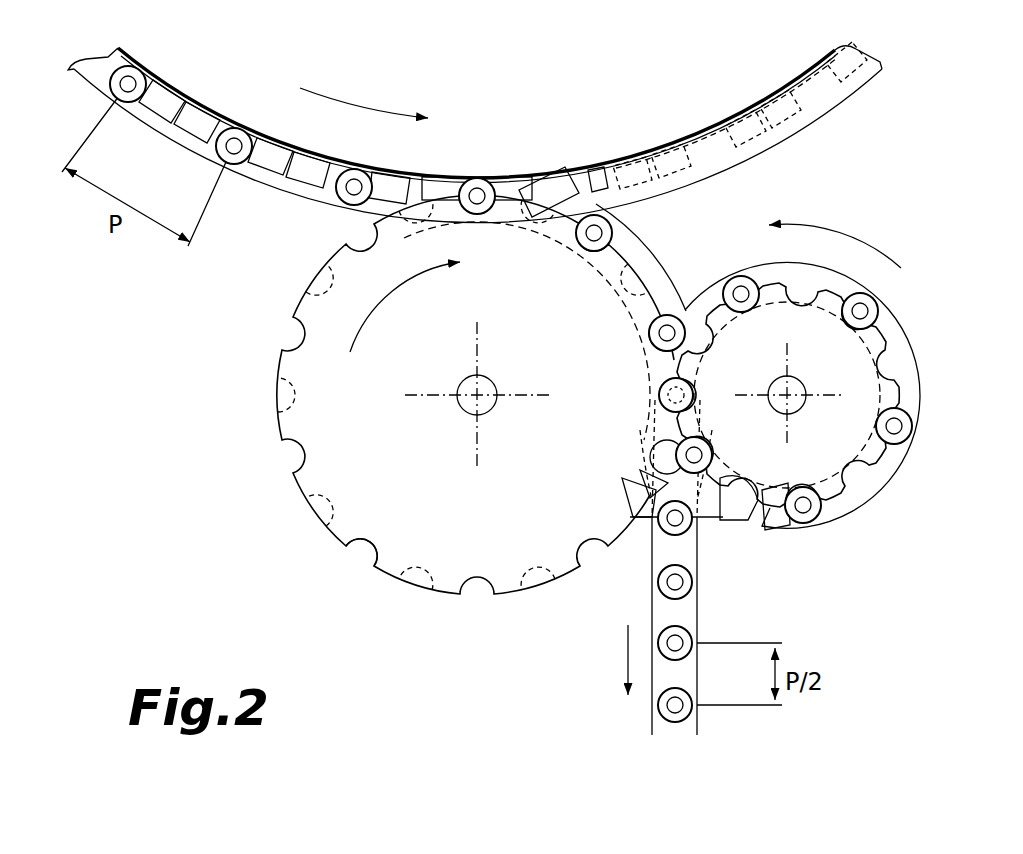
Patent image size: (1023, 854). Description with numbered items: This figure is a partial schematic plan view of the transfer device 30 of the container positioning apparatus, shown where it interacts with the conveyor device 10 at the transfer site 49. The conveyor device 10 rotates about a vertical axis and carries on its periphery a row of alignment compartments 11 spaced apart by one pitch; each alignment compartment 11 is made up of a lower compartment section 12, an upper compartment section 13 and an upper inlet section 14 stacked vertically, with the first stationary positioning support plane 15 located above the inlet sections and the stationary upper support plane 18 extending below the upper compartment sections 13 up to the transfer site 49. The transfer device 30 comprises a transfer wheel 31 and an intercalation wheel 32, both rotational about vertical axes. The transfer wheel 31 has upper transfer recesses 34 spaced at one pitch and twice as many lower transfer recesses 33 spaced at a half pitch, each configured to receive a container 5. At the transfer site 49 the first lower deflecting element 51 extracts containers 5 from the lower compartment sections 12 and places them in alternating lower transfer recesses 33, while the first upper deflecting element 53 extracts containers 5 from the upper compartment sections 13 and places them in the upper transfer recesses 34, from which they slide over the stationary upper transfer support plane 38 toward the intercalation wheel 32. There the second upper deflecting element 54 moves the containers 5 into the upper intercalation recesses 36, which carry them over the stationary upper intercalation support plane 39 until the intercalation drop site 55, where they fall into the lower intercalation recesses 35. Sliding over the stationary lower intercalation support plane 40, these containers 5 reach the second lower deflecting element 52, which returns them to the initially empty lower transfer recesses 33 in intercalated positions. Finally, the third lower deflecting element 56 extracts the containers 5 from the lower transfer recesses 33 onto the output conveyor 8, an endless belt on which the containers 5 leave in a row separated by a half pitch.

The container 5 is at (501, 416).
The output conveyor 8 is at (655, 725).
The conveyor device 10 is at (488, 131).
The alignment compartment 11 is at (257, 172).
The lower compartment section 12 is at (476, 111).
The upper compartment section 13 is at (257, 128).
The upper inlet section 14 is at (200, 130).
The first stationary positioning support plane 15 is at (838, 97).
The stationary upper support plane 18 is at (112, 90).
The transfer device 30 is at (655, 577).
The transfer wheel 31 is at (437, 416).
The intercalation wheel 32 is at (841, 402).
The lower transfer recess 33 is at (310, 510).
The upper transfer recess 34 is at (370, 545).
The lower intercalation recess 35 is at (813, 432).
The upper intercalation recess 36 is at (853, 482).
The stationary upper transfer support plane 38 is at (643, 260).
The stationary upper intercalation support plane 39 is at (740, 525).
The stationary lower intercalation support plane 40 is at (893, 468).
The transfer site 49 is at (479, 162).
The first stationary lower deflecting element 51 is at (577, 156).
The first stationary upper deflecting element 53 is at (590, 186).
The second stationary lower deflecting element 52 is at (702, 520).
The second stationary upper deflecting element 54 is at (655, 470).
The intercalation drop site 55 is at (768, 545).
The third stationary lower deflecting element 56 is at (645, 523).